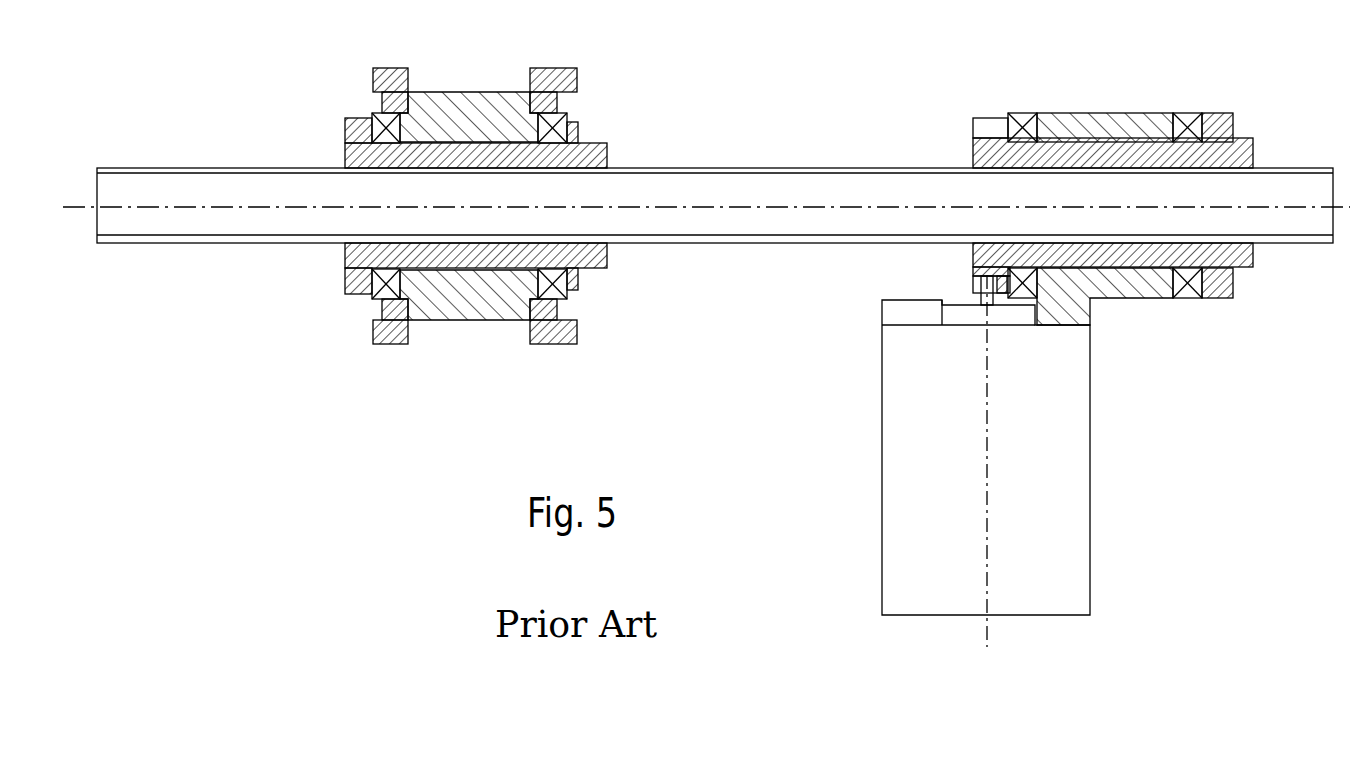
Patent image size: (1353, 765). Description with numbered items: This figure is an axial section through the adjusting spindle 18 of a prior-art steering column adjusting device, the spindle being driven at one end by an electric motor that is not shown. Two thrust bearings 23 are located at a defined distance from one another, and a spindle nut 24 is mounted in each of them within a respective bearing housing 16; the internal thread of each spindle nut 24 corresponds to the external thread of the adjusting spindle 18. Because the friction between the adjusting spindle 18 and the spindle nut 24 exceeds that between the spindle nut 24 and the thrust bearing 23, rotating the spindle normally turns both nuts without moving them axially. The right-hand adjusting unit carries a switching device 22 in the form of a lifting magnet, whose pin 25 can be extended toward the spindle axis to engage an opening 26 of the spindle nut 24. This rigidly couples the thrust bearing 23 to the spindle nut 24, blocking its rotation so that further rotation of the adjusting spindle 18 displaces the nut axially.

The bearing housing 16 is at (447, 92).
The adjusting spindle 18 is at (200, 170).
The switching device 22 is at (1080, 552).
The thrust bearing 23 is at (373, 114).
The spindle nut 24 is at (607, 152).
The pin 25 is at (983, 288).
The opening 26 is at (998, 302).